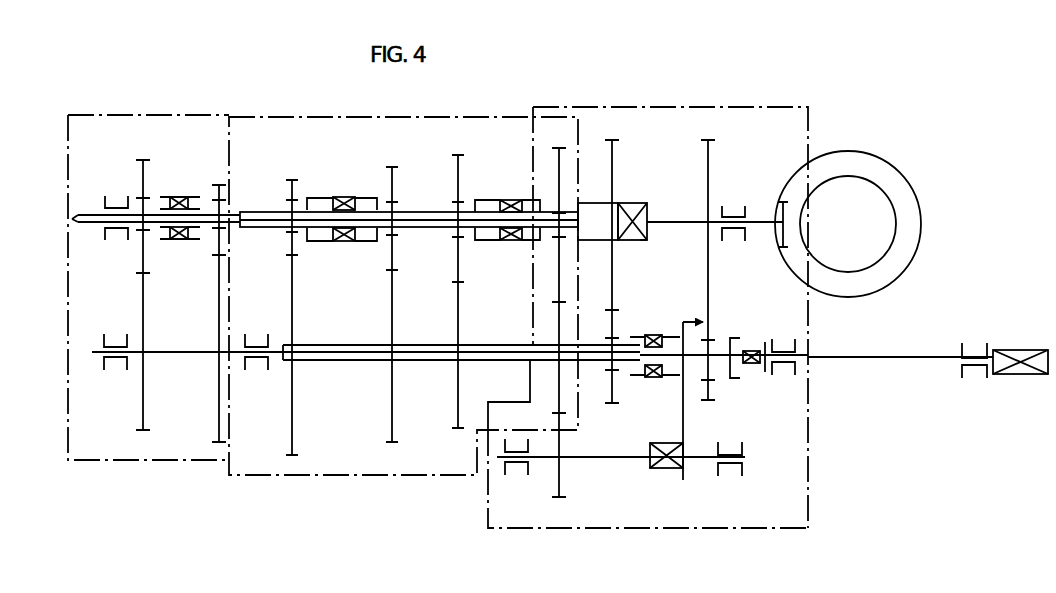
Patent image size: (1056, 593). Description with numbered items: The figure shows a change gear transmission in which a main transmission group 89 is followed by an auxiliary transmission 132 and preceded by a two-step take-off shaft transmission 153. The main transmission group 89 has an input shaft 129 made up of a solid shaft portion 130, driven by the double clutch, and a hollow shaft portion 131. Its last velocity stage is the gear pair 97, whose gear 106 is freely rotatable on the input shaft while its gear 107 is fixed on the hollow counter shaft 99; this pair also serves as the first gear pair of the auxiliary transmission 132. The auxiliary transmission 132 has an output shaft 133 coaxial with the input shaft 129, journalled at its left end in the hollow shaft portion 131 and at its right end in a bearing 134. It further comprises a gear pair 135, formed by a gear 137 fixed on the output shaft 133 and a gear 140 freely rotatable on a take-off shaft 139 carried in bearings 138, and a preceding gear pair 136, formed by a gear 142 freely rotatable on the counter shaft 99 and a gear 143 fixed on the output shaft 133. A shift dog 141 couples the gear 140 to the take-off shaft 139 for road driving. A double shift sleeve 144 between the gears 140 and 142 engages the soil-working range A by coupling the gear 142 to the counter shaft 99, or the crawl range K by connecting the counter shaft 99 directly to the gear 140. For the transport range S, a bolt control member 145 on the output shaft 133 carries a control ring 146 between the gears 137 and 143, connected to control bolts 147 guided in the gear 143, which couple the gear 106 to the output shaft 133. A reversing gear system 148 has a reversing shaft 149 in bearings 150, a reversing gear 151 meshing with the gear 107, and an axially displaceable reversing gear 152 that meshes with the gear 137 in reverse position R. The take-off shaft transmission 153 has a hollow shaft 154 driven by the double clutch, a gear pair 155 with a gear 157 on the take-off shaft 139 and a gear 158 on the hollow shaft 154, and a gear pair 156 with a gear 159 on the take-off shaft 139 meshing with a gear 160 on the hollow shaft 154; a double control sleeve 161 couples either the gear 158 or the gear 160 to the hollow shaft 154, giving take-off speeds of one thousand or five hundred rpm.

The main transmission group 89 is at (304, 117).
The gear pair 97 is at (551, 308).
The counter shaft 99 is at (316, 365).
The gear 106 is at (560, 168).
The gear 107 is at (530, 394).
The input shaft 129 is at (78, 213).
The solid shaft portion 130 is at (155, 213).
The hollow shaft portion 131 is at (419, 213).
The auxiliary transmission 132 is at (622, 107).
The output shaft 133 is at (673, 222).
The bearing 134 is at (736, 205).
The gear pair 135 is at (723, 275).
The gear pair 136 is at (622, 284).
The gear 137 is at (712, 150).
The bearings 138 is at (112, 368).
The take-off shaft 139 is at (873, 360).
The gear 140 is at (708, 395).
The shift dog 141 is at (753, 345).
The gear 142 is at (612, 397).
The gear 143 is at (614, 160).
The double shift sleeve 144 is at (650, 380).
The bolt control member 145 is at (631, 204).
The control ring 146 is at (640, 242).
The control bolts 147 is at (599, 246).
The reversing gear system 148 is at (590, 514).
The reversing shaft 149 is at (613, 460).
The bearings 150 is at (516, 476).
The reversing gear 151 is at (556, 492).
The reversing gear 152 is at (685, 470).
The two-step take-off shaft transmission 153 is at (160, 462).
The hollow shaft 154 is at (97, 233).
The gear pair 155 is at (128, 289).
The gear pair 156 is at (208, 285).
The gear 157 is at (143, 416).
The gear 158 is at (143, 160).
The gear 159 is at (216, 377).
The gear 160 is at (219, 185).
The double control sleeve 161 is at (180, 243).